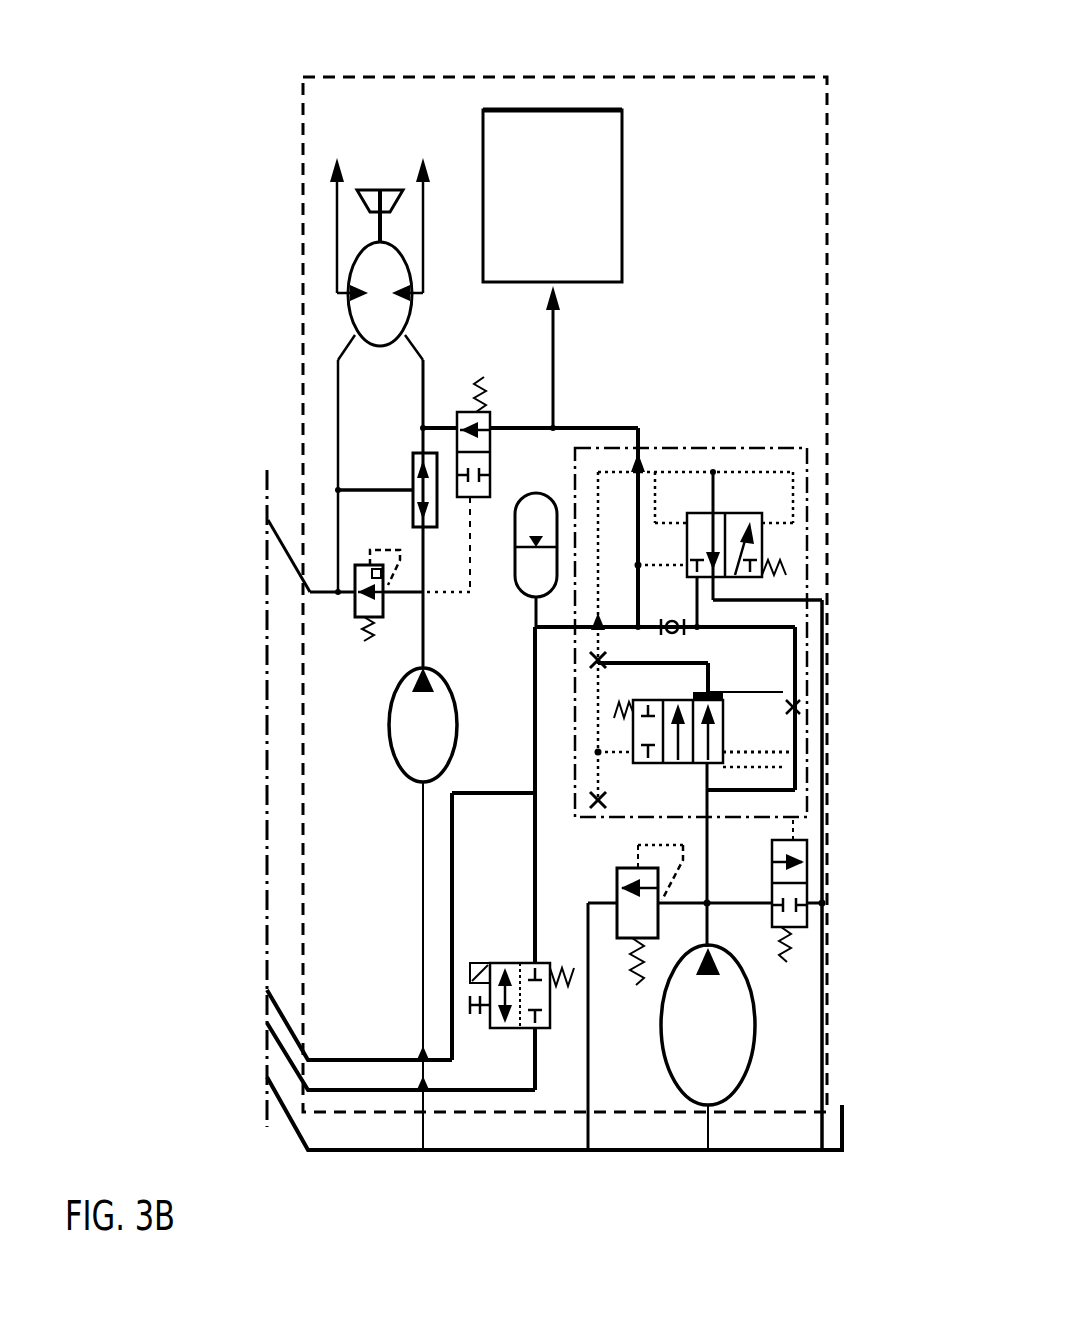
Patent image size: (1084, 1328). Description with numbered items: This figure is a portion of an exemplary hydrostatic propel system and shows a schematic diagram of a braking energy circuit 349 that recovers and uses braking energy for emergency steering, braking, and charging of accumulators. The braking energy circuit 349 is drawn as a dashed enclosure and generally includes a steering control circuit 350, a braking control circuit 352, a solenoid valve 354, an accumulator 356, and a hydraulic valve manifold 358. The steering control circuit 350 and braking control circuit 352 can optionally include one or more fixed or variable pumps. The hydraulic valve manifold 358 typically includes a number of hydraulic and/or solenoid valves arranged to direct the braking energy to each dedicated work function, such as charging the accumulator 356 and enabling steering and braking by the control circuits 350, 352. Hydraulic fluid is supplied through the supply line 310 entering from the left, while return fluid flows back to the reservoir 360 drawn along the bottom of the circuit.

The supply line 310 is at (357, 1052).
The braking energy circuit 349 is at (832, 120).
The steering control circuit 350 is at (333, 220).
The braking control circuit 352 is at (623, 106).
The solenoid valve 354 is at (502, 958).
The accumulator 356 is at (516, 594).
The hydraulic valve manifold 358 is at (814, 716).
The reservoir 360 is at (547, 1160).